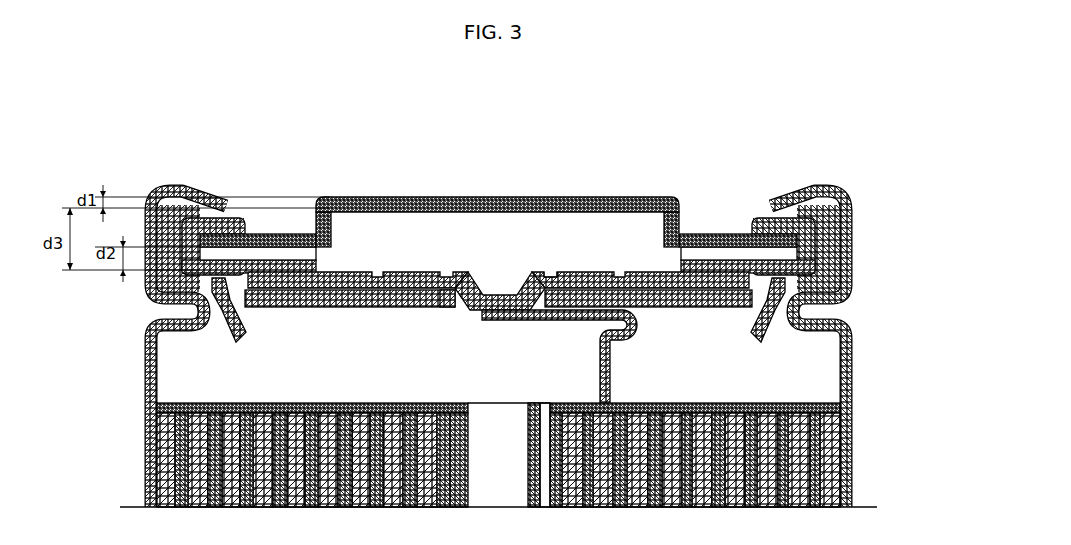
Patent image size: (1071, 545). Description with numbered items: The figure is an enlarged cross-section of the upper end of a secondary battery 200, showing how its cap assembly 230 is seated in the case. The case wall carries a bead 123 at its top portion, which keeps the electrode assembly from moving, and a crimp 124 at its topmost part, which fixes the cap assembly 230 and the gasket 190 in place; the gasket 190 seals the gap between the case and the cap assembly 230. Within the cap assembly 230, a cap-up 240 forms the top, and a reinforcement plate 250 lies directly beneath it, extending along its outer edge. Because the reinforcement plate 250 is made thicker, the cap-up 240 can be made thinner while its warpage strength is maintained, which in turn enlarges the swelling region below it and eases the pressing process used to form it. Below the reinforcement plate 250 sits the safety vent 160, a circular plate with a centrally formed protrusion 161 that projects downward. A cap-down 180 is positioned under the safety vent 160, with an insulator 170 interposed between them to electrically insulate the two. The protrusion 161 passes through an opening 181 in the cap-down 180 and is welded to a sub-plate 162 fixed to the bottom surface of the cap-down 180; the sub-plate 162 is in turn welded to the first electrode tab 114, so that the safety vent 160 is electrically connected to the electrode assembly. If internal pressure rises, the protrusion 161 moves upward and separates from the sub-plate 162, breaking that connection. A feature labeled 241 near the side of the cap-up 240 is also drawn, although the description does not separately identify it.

The secondary battery 200 is at (36, 93).
The cap assembly 230 is at (384, 156).
The insulator 170 is at (265, 233).
The side wall of cap plate 241 is at (328, 198).
The cap-up 240 is at (497, 196).
The cap-down 180 is at (423, 287).
The opening 181 is at (479, 290).
The safety vent 160 is at (628, 274).
The protrusion 161 is at (531, 272).
The sub-plate 162 is at (570, 288).
The crimp 124 is at (835, 183).
The gasket 190 is at (833, 222).
The reinforcement plate 250 is at (827, 255).
The bead 123 is at (145, 385).
The first electrode tab 114 is at (613, 377).